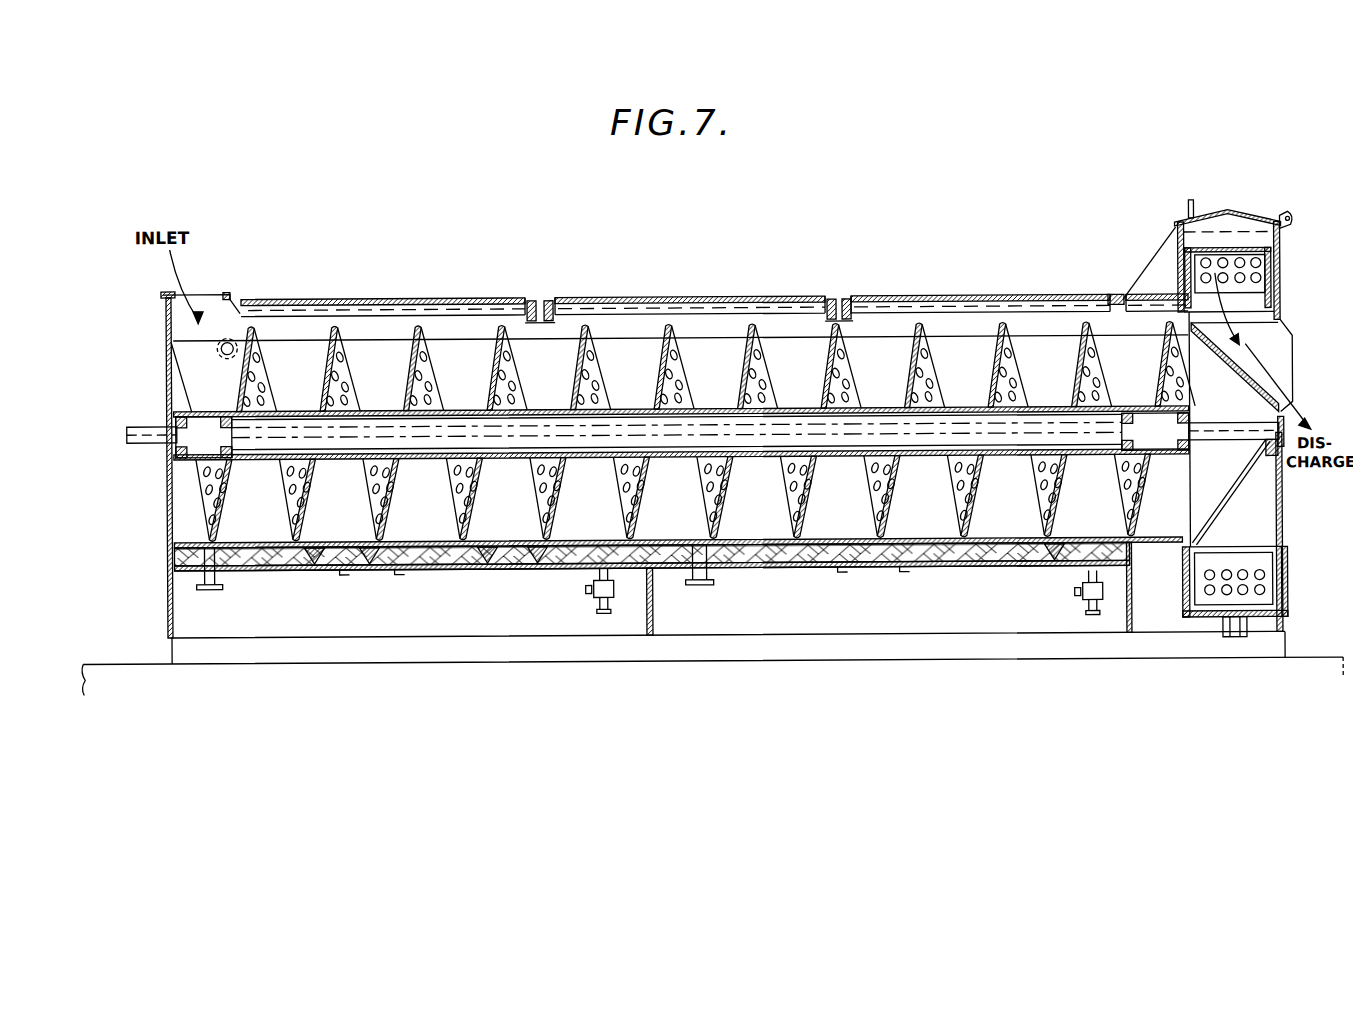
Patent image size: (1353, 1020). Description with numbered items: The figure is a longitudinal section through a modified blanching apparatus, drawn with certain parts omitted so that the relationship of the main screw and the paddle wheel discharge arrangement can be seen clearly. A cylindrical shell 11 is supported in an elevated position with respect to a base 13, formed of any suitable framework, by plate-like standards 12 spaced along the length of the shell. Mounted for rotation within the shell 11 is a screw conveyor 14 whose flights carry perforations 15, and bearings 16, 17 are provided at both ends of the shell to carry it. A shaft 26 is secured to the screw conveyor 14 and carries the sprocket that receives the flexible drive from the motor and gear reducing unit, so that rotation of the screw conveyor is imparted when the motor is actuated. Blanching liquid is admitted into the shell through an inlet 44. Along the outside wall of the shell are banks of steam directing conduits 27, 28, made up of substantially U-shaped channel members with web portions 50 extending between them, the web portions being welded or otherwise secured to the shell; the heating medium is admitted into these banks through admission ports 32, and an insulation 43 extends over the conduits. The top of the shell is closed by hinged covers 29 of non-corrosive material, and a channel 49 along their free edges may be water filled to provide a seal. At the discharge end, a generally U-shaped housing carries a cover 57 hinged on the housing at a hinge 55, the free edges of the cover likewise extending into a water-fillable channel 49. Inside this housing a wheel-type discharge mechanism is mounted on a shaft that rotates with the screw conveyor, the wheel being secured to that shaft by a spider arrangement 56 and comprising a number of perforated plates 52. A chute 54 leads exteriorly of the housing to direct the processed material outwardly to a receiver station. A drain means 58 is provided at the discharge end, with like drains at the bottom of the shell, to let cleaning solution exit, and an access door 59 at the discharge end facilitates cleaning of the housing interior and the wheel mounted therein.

The cylindrical shell 11 is at (1000, 540).
The plate-like standards 12 is at (170, 606).
The base 13 is at (380, 651).
The screw conveyor 14 is at (873, 412).
The perforations 15 is at (587, 370).
The bearing 16 is at (160, 454).
The bearing 17 is at (1268, 452).
The shaft 26 is at (140, 432).
The steam directing conduits 27 is at (370, 551).
The steam directing conduits 28 is at (1055, 553).
The covers 29 is at (447, 301).
The admission ports 32 is at (595, 606).
The insulation 43 is at (448, 574).
The inlet 44 is at (228, 345).
The channel 49 is at (553, 302).
The web portions 50 is at (400, 575).
The plates 52 is at (1258, 285).
The chute 54 is at (1276, 360).
The hinge 55 is at (1294, 223).
The spider arrangement 56 is at (1227, 494).
The cover 57 is at (1247, 219).
The drain means 58 is at (215, 593).
The access door 59 is at (1293, 587).